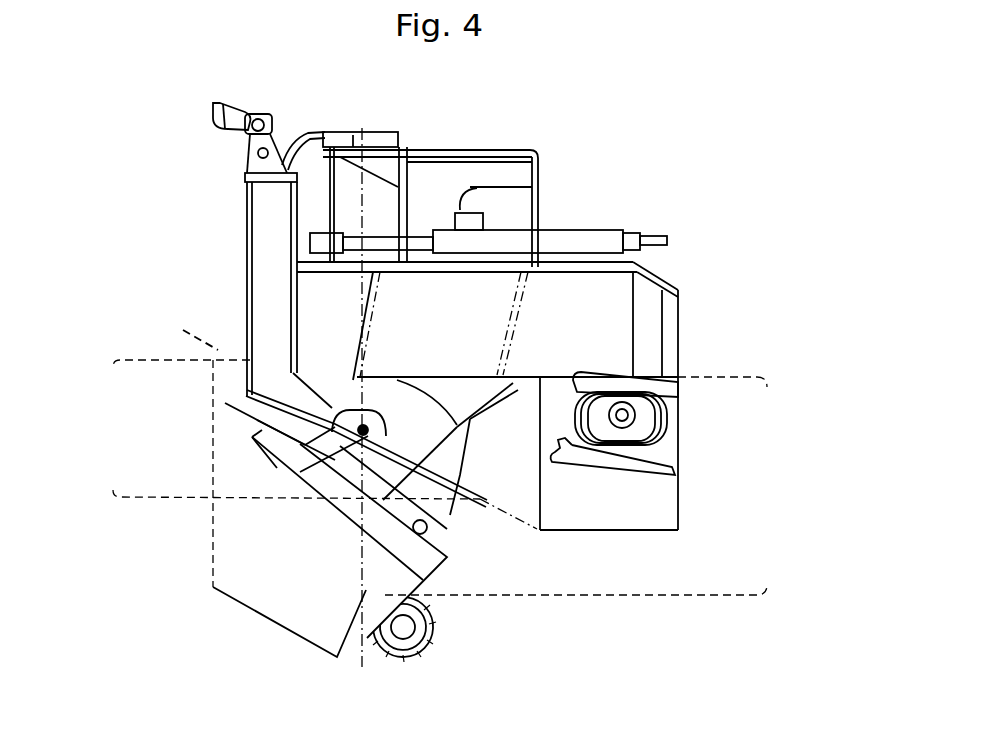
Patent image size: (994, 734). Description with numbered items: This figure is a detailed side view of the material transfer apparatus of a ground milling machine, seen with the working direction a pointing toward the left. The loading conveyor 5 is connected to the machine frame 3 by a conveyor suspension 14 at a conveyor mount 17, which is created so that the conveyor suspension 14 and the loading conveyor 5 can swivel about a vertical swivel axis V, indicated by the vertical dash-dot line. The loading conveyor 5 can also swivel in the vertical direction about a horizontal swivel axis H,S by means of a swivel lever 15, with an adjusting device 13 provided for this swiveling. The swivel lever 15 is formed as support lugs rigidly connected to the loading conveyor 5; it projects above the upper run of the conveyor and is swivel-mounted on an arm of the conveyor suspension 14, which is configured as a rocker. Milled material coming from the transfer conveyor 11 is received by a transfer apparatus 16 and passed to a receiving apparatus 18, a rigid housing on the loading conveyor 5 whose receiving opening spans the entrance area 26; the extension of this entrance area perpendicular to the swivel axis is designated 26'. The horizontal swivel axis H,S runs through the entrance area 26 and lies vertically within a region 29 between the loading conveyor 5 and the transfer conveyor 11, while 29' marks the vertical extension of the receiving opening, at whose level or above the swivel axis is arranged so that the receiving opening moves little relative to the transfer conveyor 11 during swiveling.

The machine frame 3 is at (460, 183).
The loading conveyor 5 is at (238, 385).
The transfer conveyor 11 is at (645, 443).
The adjusting device 13 is at (220, 103).
The conveyor suspension 14 is at (262, 330).
The swivel lever 15 is at (360, 597).
The transfer apparatus 16 is at (493, 337).
The conveyor mount 17 is at (416, 142).
The receiving apparatus 18 is at (457, 522).
The entrance area 26 is at (446, 538).
The extension of the entrance area 26' is at (211, 467).
The region 29 is at (604, 486).
The extension of the receiving opening 29' is at (265, 473).
The vertical swivel axis V is at (375, 458).
The horizontal swivel axis H,S is at (330, 455).
The working direction a is at (785, 125).